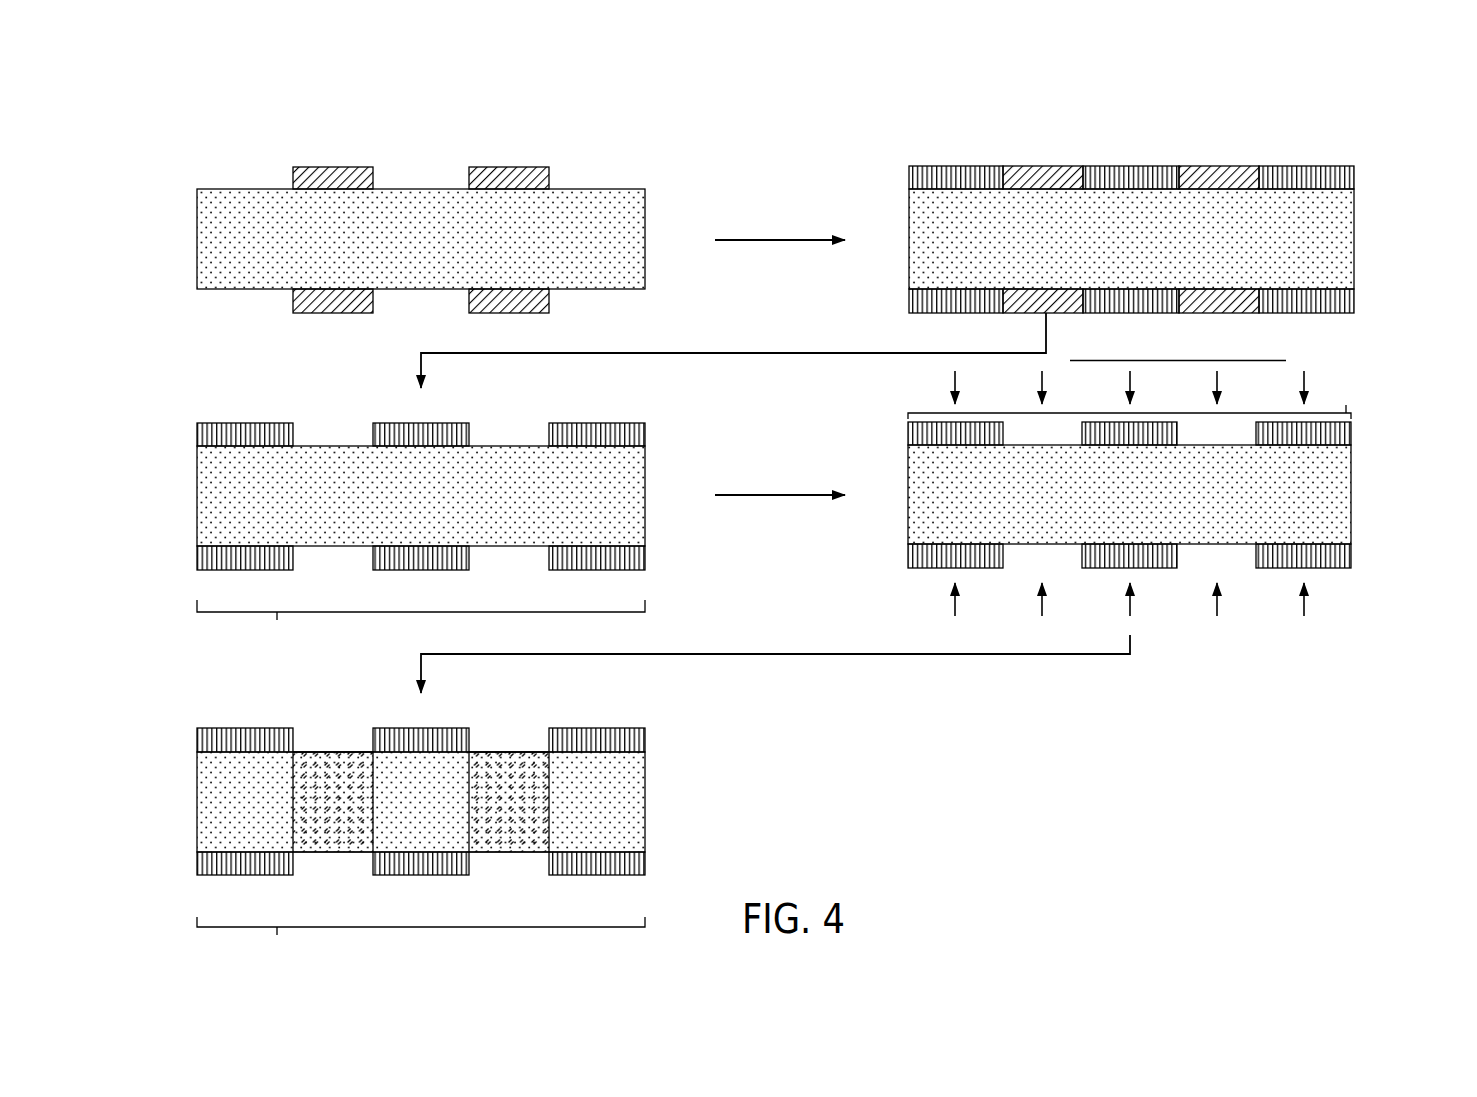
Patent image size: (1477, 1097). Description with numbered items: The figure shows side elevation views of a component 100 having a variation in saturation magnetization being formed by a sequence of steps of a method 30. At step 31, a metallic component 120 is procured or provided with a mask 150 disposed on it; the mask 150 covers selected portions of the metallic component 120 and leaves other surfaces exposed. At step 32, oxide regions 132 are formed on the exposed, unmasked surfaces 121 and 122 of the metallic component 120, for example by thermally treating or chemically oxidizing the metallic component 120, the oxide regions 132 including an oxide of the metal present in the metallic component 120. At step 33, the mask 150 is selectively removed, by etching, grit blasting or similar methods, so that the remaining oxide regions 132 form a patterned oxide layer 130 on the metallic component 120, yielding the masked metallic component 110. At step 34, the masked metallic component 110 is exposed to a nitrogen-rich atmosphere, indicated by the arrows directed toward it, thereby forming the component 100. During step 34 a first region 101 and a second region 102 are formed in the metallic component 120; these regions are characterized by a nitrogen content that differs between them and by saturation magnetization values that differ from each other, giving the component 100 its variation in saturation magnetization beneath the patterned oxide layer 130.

The method 30 is at (1352, 97).
The step of procuring metallic component with mask 31 is at (381, 240).
The step of forming oxide regions 32 is at (882, 160).
The step of selectively removing mask 33 is at (172, 418).
The step of exposing to nitrogen-rich atmosphere 34 is at (882, 416).
The component 100 is at (190, 845).
The first region 101 is at (573, 823).
The second region 102 is at (493, 740).
The masked metallic component 110 is at (190, 540).
The metallic component 120 is at (637, 217).
The exposed surface 121 is at (577, 188).
The exposed surface 122 is at (573, 290).
The patterned oxide layer 130 is at (780, 673).
The oxide regions 132 is at (293, 556).
The mask 150 is at (468, 177).